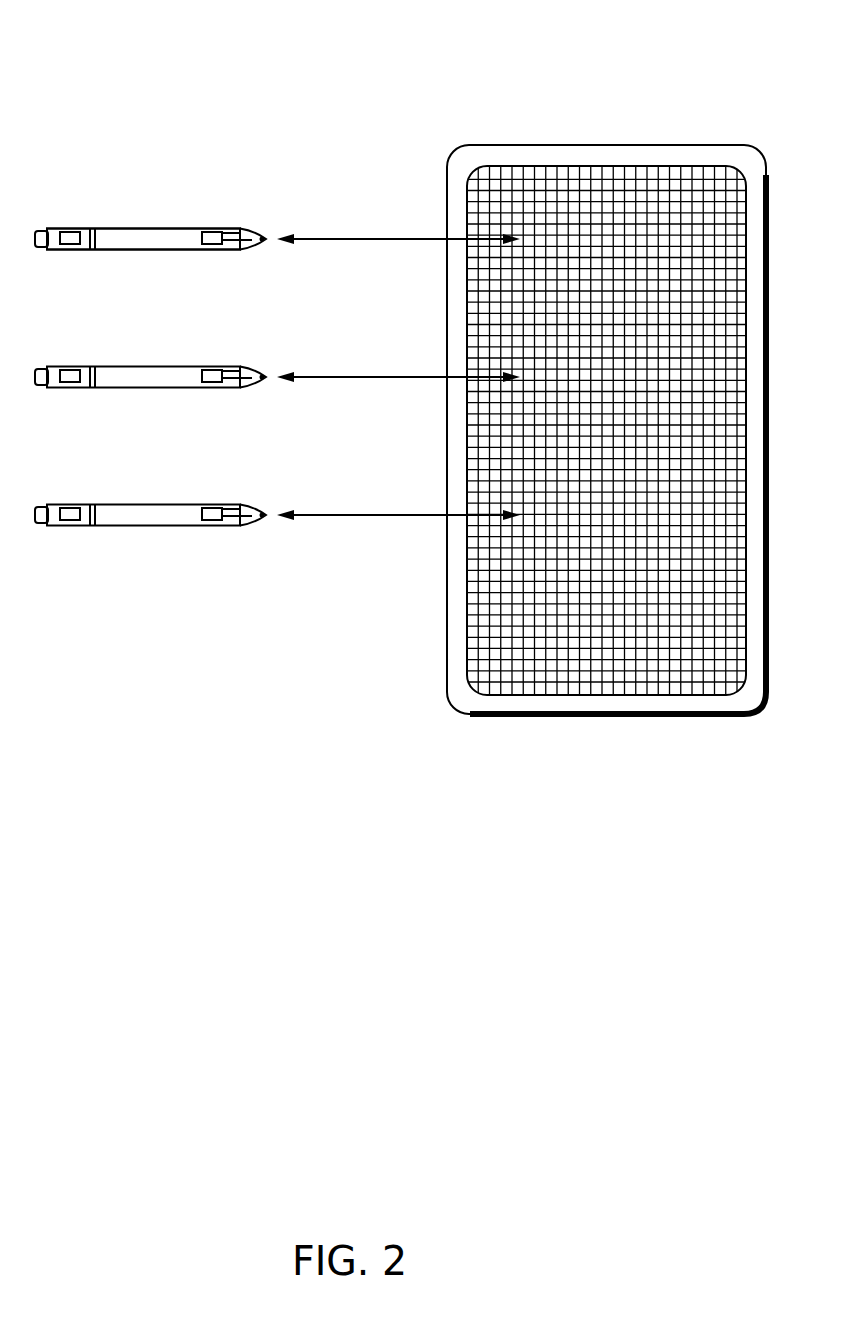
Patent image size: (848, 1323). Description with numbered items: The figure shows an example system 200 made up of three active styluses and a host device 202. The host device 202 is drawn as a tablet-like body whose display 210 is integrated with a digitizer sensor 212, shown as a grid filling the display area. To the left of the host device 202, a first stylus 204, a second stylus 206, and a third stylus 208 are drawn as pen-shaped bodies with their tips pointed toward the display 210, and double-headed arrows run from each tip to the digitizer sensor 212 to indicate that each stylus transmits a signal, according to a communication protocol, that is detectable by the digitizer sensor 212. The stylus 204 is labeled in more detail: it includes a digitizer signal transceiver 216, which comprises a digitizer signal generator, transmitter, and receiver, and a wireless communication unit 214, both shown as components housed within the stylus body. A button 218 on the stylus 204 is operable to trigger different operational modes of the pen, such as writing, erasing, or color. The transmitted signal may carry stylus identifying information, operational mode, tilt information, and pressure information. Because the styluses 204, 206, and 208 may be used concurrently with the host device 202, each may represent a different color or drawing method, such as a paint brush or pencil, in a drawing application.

The system 200 is at (108, 68).
The host device 202 is at (447, 160).
The stylus 204 is at (118, 229).
The stylus 206 is at (118, 367).
The stylus 208 is at (118, 504).
The display 210 is at (572, 166).
The digitizer sensor 212 is at (716, 173).
The wireless communication unit 214 is at (45, 266).
The digitizer signal transceiver 216 is at (184, 210).
The button 218 is at (143, 266).